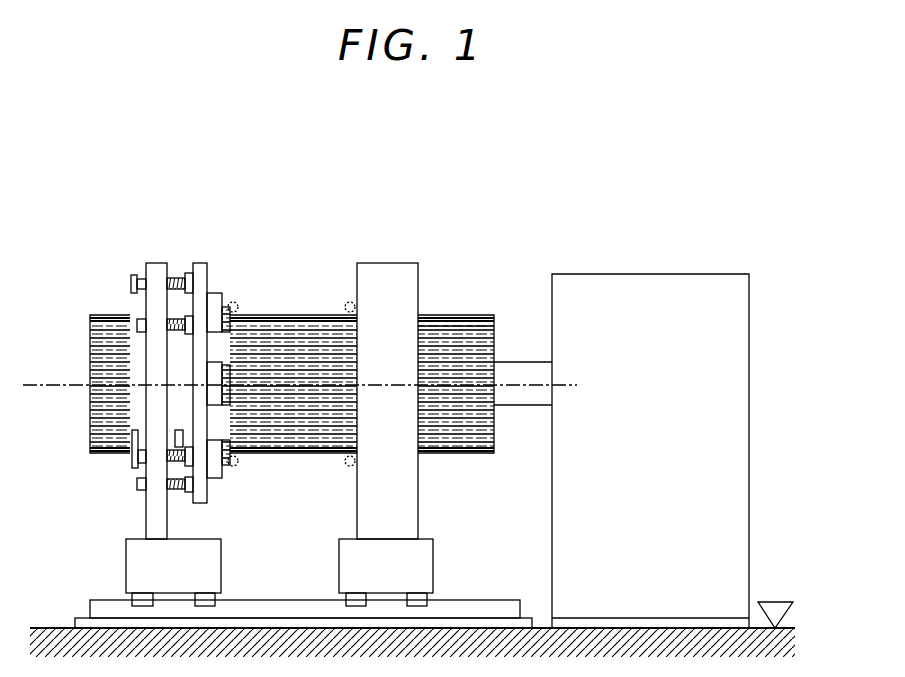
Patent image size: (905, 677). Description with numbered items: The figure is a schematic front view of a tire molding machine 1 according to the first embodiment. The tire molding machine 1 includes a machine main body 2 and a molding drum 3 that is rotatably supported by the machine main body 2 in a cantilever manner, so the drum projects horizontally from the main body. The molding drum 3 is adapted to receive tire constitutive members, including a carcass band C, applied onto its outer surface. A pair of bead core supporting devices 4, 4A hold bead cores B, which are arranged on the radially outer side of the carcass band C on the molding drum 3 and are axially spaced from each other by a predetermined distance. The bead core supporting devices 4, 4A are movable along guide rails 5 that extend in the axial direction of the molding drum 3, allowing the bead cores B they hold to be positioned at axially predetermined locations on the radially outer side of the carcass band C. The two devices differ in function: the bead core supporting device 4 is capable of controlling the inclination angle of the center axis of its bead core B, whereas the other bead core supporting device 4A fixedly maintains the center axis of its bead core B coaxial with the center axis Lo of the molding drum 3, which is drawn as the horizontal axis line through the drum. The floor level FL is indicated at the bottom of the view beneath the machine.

The tire molding machine 1 is at (441, 221).
The machine main body 2 is at (648, 306).
The molding drum 3 is at (447, 352).
The bead core supporting device 4 is at (175, 255).
The bead core supporting device 4A is at (388, 258).
The guide rails 5 is at (462, 605).
The bead cores B is at (238, 300).
The carcass band C is at (432, 327).
The center axis Lo is at (48, 388).
The floor level FL is at (412, 615).